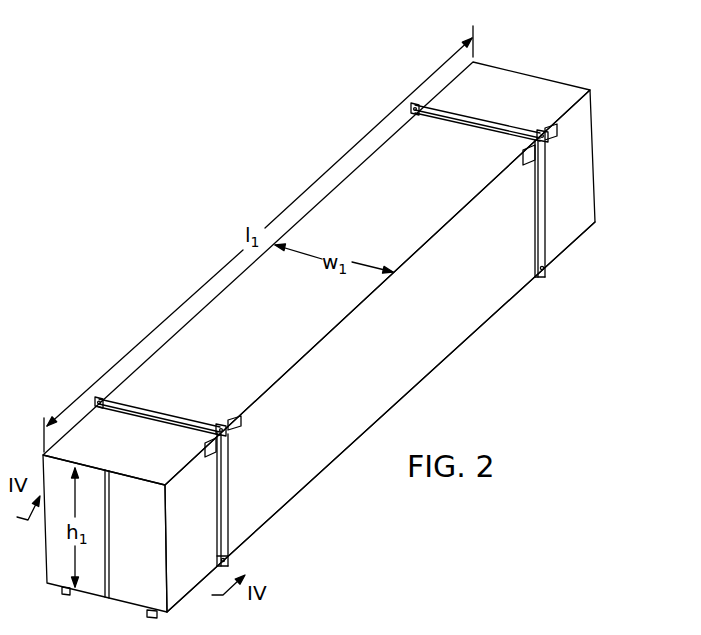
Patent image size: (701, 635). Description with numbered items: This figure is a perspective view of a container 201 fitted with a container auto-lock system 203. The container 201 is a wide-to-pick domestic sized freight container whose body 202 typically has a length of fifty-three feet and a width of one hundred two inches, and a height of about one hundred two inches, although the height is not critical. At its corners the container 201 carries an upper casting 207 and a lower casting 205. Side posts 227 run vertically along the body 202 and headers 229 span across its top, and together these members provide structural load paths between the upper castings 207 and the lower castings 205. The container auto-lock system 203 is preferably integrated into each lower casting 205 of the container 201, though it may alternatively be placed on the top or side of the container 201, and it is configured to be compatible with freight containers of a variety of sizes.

The container 201 is at (170, 205).
The body 202 is at (433, 366).
The container auto-lock system 203 is at (300, 537).
The lower casting 205 is at (230, 558).
The upper casting 207 is at (100, 402).
The side post 227 is at (228, 475).
The header 229 is at (163, 410).